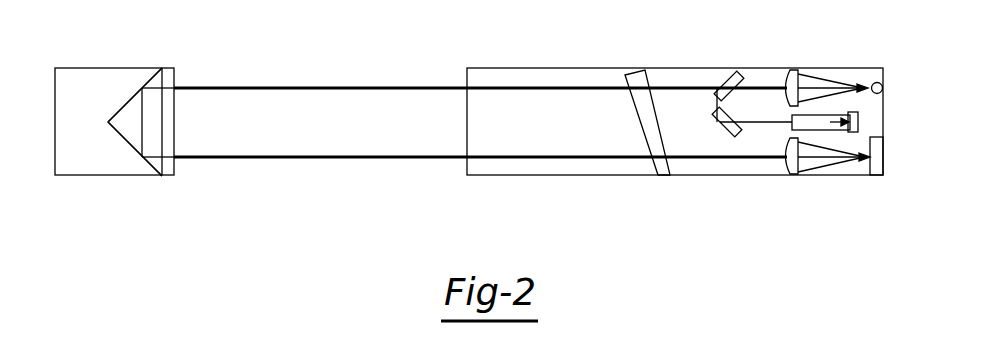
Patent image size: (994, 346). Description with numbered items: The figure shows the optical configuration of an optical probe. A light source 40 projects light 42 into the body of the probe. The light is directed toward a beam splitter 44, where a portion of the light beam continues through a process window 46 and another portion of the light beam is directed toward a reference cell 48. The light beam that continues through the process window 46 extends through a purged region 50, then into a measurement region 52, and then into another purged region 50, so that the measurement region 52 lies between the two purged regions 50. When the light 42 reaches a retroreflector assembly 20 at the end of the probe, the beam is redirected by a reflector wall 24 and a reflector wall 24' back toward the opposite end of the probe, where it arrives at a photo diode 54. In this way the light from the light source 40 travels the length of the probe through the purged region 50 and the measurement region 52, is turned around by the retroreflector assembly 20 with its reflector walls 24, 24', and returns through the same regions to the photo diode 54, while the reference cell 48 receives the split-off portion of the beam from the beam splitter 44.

The purged region 50 is at (82, 82).
The retroreflector assembly 20 is at (144, 71).
The reflector wall 24 is at (89, 95).
The reflector wall 24' is at (135, 178).
The measurement region 52 is at (338, 127).
The process window 46 is at (636, 82).
The beam splitter 44 is at (733, 78).
The light 42 is at (822, 82).
The light source 40 is at (876, 82).
The reference cell 48 is at (859, 122).
The photo diode 54 is at (877, 176).